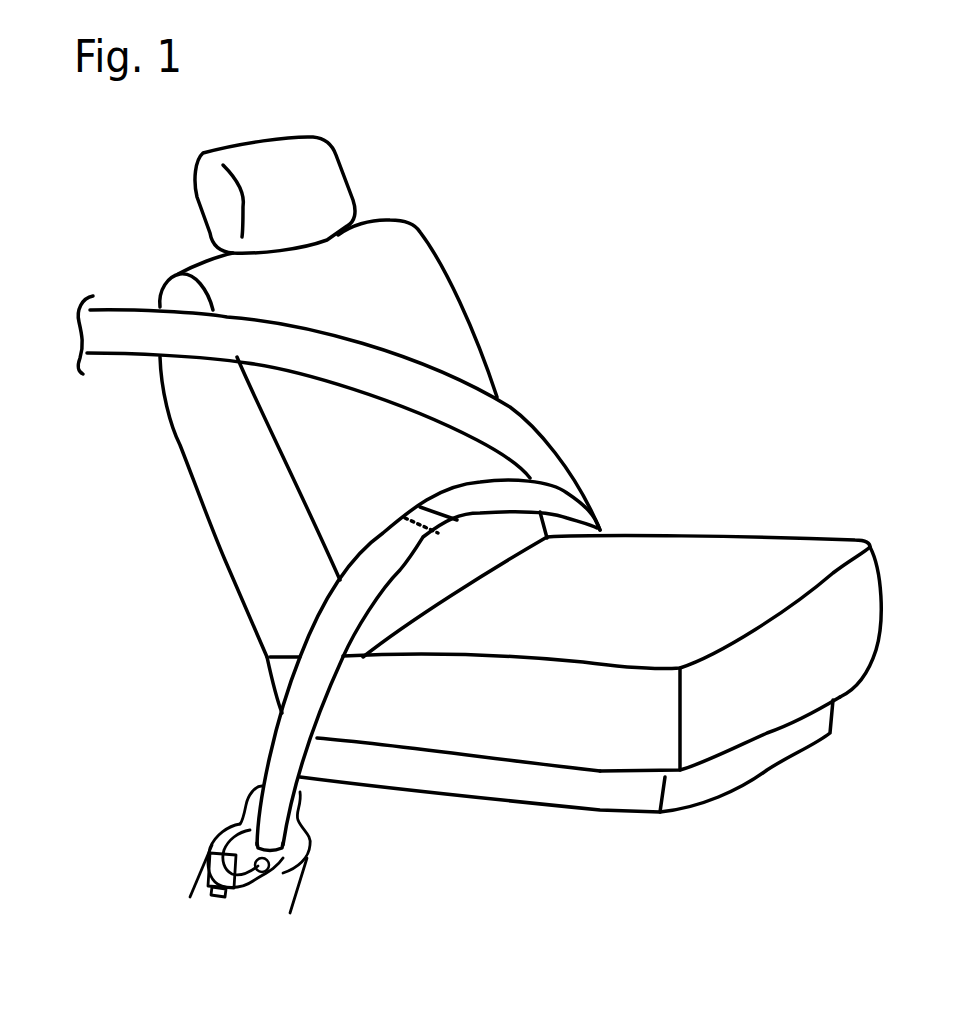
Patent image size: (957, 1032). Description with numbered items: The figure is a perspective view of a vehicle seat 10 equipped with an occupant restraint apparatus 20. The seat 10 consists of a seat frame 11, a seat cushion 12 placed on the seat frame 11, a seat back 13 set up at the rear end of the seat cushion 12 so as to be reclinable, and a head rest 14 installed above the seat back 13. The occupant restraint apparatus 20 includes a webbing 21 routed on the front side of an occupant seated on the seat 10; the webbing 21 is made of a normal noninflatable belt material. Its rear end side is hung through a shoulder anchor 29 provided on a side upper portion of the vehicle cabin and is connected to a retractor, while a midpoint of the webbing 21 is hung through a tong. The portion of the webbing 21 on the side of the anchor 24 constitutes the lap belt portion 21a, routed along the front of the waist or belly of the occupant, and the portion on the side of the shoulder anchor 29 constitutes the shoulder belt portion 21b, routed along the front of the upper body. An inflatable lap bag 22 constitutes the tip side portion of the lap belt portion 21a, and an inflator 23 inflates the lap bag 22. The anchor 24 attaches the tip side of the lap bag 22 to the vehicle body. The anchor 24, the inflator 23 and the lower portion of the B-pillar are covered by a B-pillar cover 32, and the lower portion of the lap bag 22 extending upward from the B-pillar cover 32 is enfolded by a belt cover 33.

The seat 10 is at (433, 210).
The seat frame 11 is at (493, 773).
The seat cushion 12 is at (863, 607).
The seat back 13 is at (213, 480).
The head rest 14 is at (291, 154).
The occupant restraint apparatus 20 is at (270, 610).
The webbing 21 is at (523, 370).
The lap belt portion 21a is at (550, 497).
The shoulder belt portion 21b is at (530, 433).
The lap bag 22 is at (387, 560).
The inflator 23 is at (217, 847).
The anchor 24 is at (297, 867).
The shoulder anchor 29 is at (237, 823).
The B-pillar cover 32 is at (310, 843).
The belt cover 33 is at (250, 795).